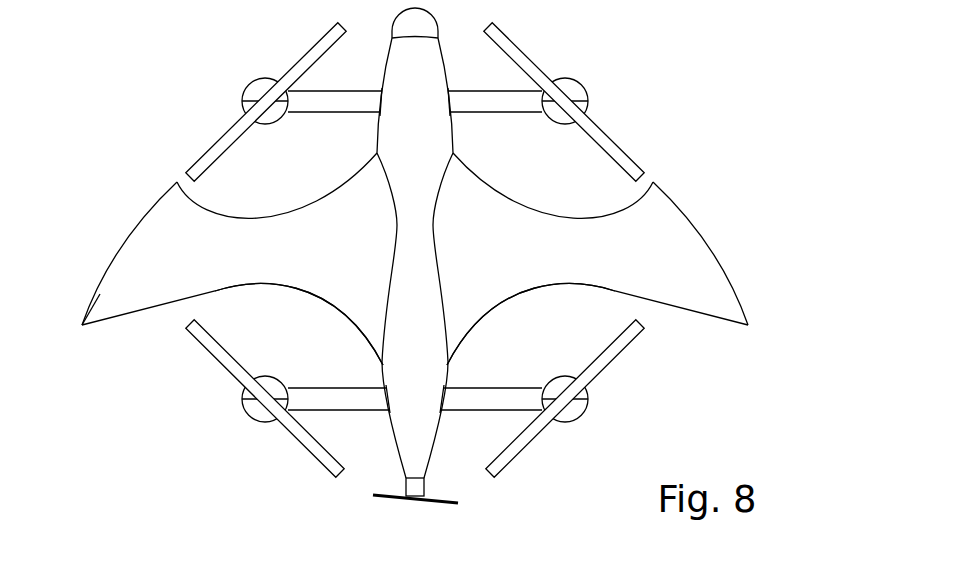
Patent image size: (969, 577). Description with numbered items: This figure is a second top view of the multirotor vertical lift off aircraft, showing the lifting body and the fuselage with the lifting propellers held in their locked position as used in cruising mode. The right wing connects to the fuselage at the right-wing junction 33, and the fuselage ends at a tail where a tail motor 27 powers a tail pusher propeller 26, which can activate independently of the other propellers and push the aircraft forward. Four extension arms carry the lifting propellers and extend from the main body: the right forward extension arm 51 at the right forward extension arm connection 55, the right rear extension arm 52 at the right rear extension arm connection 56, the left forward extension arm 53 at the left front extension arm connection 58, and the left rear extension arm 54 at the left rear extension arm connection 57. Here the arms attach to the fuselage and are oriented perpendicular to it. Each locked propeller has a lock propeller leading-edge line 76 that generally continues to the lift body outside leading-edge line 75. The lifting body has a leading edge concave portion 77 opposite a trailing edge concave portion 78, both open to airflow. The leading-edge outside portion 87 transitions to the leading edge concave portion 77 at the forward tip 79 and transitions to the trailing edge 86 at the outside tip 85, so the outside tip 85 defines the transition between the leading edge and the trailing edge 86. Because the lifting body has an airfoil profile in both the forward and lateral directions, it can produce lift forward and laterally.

The tail pusher propeller 26 is at (437, 507).
The tail motor 27 is at (416, 492).
The right-wing junction 33 is at (392, 183).
The right forward extension arm 51 is at (497, 97).
The right rear extension arm 52 is at (488, 395).
The left forward extension arm 53 is at (333, 100).
The left rear extension arm 54 is at (352, 395).
The right forward extension arm connection 55 is at (450, 100).
The right rear extension arm connection 56 is at (445, 400).
The left rear extension arm connection 57 is at (383, 400).
The left front extension arm connection 58 is at (380, 100).
The lift body outside leading-edge line 75 is at (616, 266).
The lock propeller leading-edge line 76 is at (625, 138).
The leading edge concave portion 77 is at (323, 202).
The trailing edge concave portion 78 is at (323, 295).
The forward tip 79 is at (204, 263).
The outside tip 85 is at (75, 327).
The trailing edge 86 is at (127, 312).
The leading-edge outside portion 87 is at (727, 280).